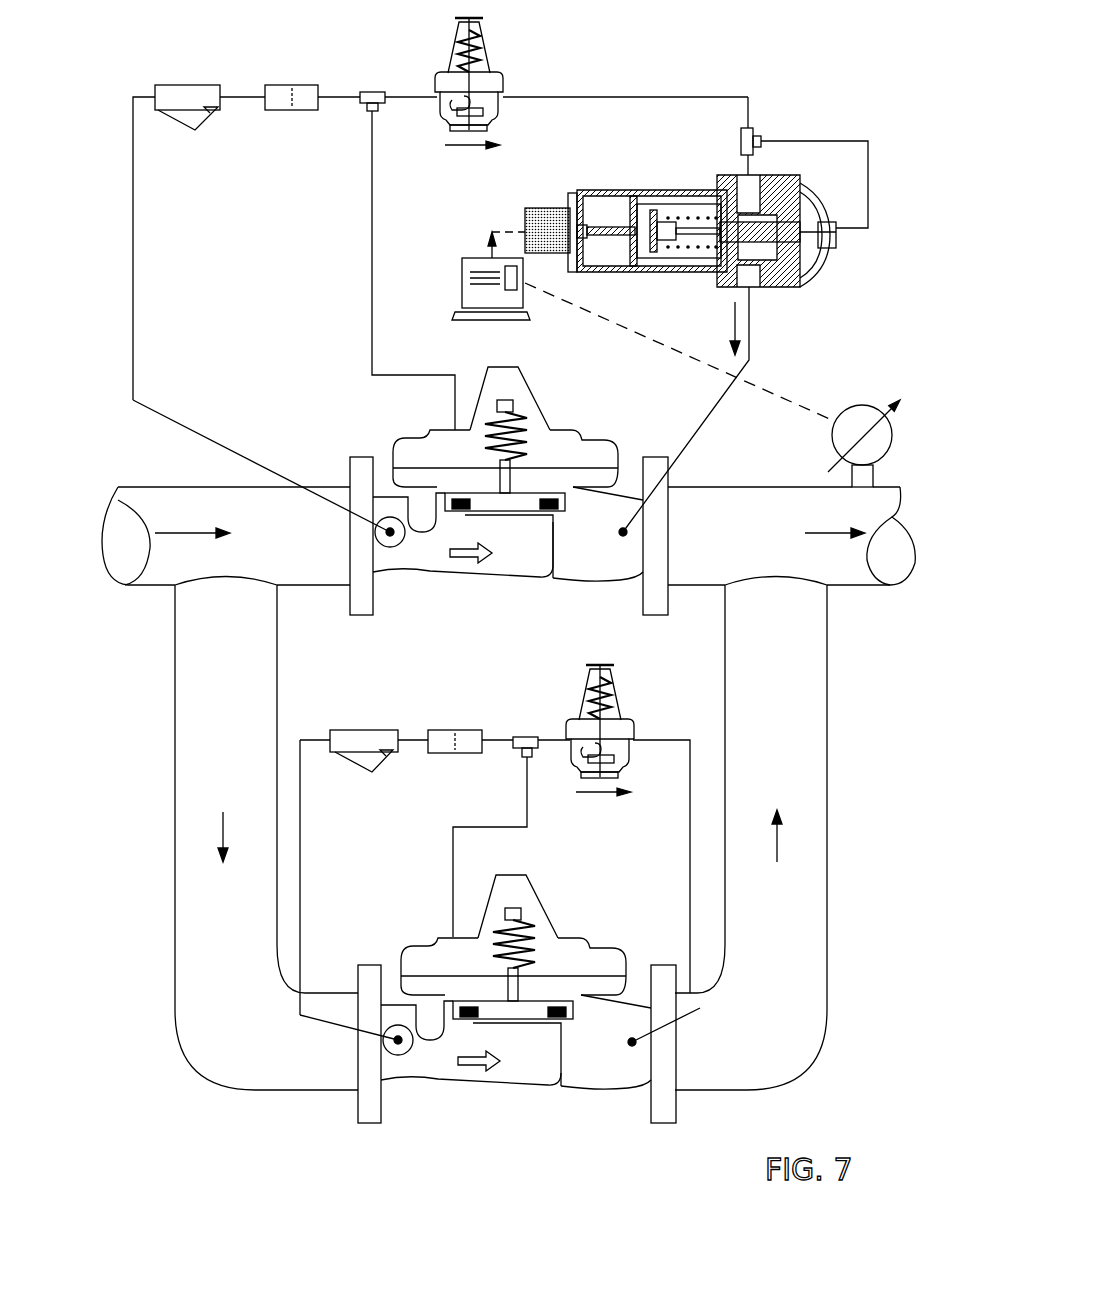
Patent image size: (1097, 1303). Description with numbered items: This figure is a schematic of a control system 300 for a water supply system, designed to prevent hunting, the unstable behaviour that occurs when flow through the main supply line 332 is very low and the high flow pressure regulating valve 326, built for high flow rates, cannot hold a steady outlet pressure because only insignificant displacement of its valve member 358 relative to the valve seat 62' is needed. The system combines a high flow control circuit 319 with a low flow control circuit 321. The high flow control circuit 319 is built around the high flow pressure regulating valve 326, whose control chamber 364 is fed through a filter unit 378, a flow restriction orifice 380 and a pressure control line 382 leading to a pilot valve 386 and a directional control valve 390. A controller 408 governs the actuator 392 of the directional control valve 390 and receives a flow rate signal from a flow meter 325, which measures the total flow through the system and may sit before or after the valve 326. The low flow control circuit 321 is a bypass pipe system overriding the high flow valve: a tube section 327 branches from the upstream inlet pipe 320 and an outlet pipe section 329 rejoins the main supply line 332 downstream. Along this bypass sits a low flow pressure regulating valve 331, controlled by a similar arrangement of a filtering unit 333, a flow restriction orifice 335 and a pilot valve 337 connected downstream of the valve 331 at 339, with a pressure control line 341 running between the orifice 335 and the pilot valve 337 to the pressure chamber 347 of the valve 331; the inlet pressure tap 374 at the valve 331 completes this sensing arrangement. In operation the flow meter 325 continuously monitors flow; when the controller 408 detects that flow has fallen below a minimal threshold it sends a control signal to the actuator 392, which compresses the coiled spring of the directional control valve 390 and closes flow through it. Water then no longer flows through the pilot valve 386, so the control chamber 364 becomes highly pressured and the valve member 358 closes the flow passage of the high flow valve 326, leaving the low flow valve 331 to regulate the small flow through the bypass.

The control system 300 is at (483, 857).
The high flow control circuit 319 is at (203, 275).
The upstream inlet pipe 320 is at (292, 562).
The low flow control circuit 321 is at (703, 958).
The flow meter 325 is at (833, 438).
The high flow pressure regulating valve 326 is at (504, 499).
The tube section 327 is at (262, 1073).
The outlet pipe section 329 is at (812, 952).
The low flow pressure regulating valve 331 is at (525, 1008).
The main supply line 332 is at (690, 562).
The filtering unit 333 is at (342, 730).
The flow restriction orifice 335 is at (440, 730).
The pilot valve 337 is at (624, 692).
The downstream connection point 339 is at (632, 1042).
The pressure control line 341 is at (527, 812).
The pressure chamber 347 is at (443, 962).
The valve member 358 is at (532, 502).
The control chamber 364 is at (440, 460).
The upstream pressure tap 374 is at (398, 1040).
The filter unit 378 is at (168, 85).
The flow restriction orifice 380 is at (278, 85).
The pressure control line 382 is at (372, 222).
The pilot valve 386 is at (492, 46).
The directional control valve 390 is at (670, 182).
The actuator 392 is at (552, 208).
The controller 408 is at (460, 300).
The valve seat 62' is at (589, 571).